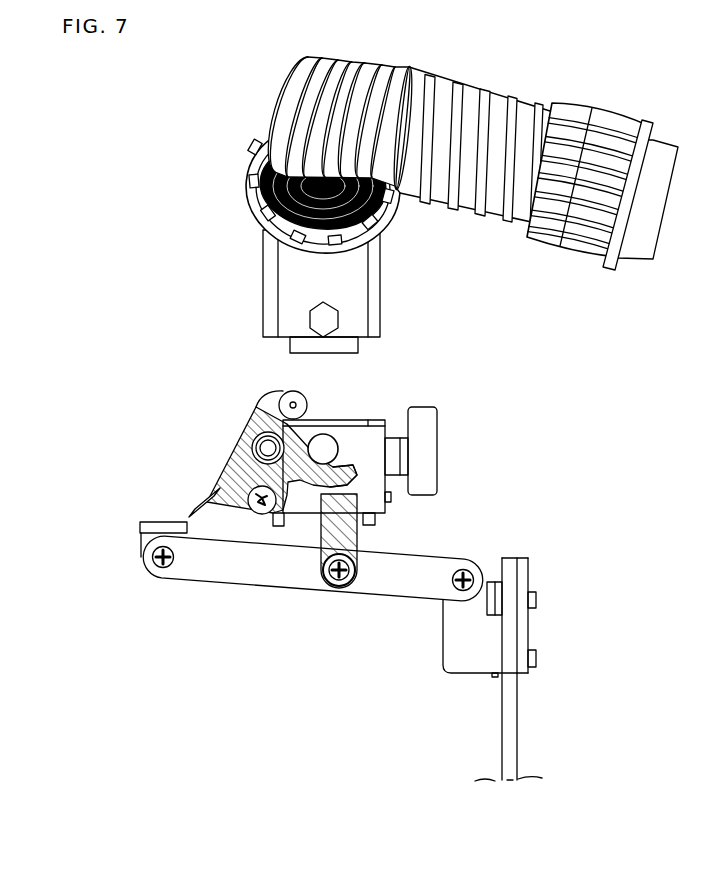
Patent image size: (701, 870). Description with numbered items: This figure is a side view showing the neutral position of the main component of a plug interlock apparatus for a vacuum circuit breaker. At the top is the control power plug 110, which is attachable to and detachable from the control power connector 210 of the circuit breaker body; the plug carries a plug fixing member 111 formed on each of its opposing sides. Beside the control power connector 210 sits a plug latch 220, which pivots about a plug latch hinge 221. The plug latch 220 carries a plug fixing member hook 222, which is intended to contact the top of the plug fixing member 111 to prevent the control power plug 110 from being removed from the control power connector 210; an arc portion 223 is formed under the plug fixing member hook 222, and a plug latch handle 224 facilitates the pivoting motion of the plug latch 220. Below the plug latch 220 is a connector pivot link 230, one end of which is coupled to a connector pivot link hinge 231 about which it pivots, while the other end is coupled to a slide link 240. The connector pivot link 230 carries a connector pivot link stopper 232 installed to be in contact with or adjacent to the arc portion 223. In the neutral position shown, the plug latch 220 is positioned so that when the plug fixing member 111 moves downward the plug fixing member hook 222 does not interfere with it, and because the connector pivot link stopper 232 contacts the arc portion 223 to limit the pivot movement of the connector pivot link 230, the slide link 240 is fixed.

The control power plug 110 is at (287, 280).
The plug fixing member 111 is at (328, 318).
The control power connector 210 is at (372, 455).
The plug latch 220 is at (243, 445).
The plug latch hinge 221 is at (333, 448).
The plug fixing member hook 222 is at (283, 400).
The arc portion 223 is at (355, 482).
The plug latch handle 224 is at (207, 496).
The connector pivot link 230 is at (392, 579).
The connector pivot link hinge 231 is at (153, 558).
The connector pivot link stopper 232 is at (330, 541).
The slide link 240 is at (508, 718).